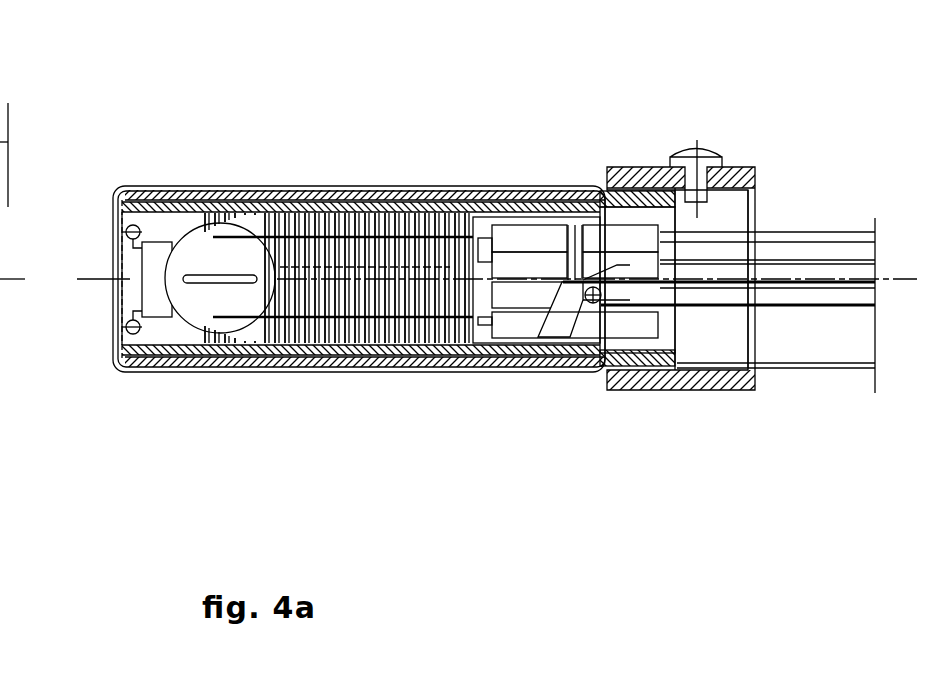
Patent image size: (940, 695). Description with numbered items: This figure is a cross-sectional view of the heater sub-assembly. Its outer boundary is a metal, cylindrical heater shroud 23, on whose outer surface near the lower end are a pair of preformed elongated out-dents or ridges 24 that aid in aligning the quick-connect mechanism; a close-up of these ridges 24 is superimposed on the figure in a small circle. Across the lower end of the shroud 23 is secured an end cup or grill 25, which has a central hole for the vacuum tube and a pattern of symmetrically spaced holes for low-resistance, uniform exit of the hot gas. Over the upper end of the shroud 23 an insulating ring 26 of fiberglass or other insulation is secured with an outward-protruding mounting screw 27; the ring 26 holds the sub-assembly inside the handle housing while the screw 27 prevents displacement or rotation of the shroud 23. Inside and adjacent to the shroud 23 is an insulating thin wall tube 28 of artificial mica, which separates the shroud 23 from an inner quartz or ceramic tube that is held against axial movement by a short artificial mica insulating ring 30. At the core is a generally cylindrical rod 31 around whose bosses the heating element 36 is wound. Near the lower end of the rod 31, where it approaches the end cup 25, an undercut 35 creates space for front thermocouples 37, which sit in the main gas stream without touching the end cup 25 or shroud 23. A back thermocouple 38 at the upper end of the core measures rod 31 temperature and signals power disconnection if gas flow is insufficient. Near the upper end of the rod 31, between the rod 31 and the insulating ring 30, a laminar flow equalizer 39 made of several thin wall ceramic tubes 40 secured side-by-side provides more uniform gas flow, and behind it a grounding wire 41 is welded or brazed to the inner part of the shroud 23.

The heater shroud 23 is at (273, 187).
The preformed elongated out-dents or ridges 24 is at (217, 272).
The end cup or grill 25 is at (113, 227).
The insulating ring 26 is at (637, 166).
The mounting screw 27 is at (717, 149).
The insulating thin wall tube 28 is at (368, 187).
The insulating ring 30 is at (616, 189).
The rod 31 is at (432, 298).
The undercut 35 is at (113, 362).
The heating element 36 is at (360, 343).
The front thermocouples 37 is at (135, 338).
The back thermocouple 38 is at (587, 308).
The laminar flow equalizer 39 is at (595, 346).
The thin wall ceramic tubes 40 is at (631, 329).
The grounding wire 41 is at (771, 368).